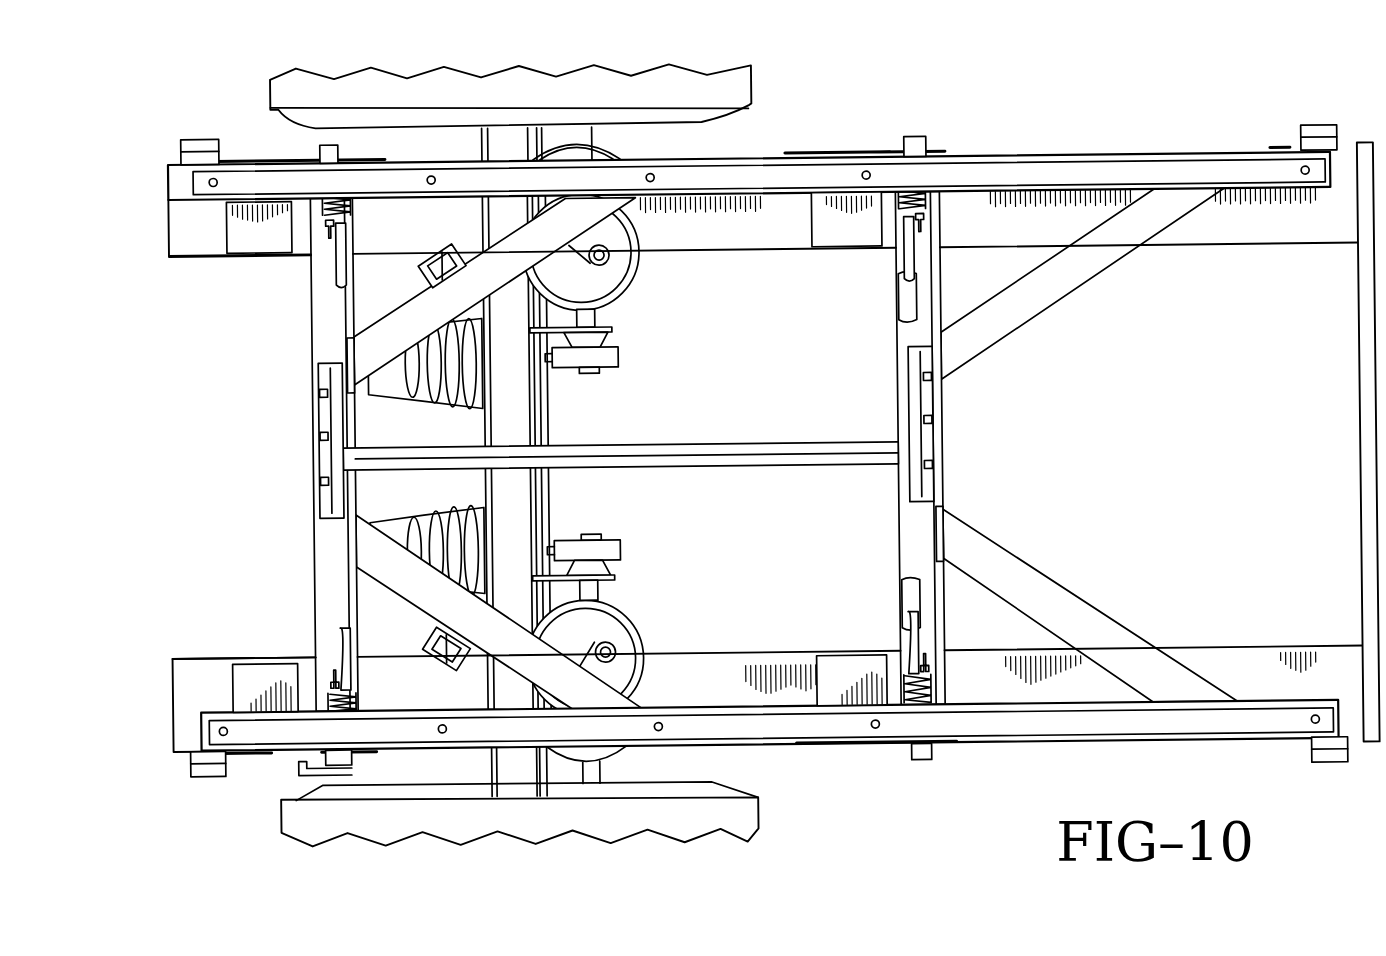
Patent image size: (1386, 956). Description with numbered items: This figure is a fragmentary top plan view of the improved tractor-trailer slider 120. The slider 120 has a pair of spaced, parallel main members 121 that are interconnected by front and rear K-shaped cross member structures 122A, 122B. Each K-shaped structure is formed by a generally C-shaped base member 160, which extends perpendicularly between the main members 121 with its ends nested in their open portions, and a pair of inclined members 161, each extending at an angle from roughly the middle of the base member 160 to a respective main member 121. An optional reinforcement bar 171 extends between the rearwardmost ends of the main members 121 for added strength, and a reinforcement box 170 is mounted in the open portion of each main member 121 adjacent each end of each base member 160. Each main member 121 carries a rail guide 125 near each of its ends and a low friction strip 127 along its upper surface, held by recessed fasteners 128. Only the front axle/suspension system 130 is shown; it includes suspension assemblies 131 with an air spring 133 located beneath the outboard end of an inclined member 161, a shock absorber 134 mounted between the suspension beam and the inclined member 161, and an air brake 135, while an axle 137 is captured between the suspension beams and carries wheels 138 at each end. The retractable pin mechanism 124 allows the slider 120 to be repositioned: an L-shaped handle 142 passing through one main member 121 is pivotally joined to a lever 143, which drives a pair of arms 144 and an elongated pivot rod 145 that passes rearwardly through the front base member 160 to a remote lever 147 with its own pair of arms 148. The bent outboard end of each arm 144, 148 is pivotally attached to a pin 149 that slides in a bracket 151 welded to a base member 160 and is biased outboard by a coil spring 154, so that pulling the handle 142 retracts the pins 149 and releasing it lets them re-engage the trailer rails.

The slider 120 is at (1048, 145).
The main member 121 is at (186, 255).
The front K-shaped cross member structure 122A is at (606, 453).
The rear K-shaped cross member structure 122B is at (794, 451).
The retractable pin mechanism 124 is at (620, 444).
The rail guide 125 is at (200, 138).
The low friction strip 127 is at (1184, 174).
The recessed fastener 128 is at (866, 183).
The axle/suspension system 130 is at (608, 545).
The suspension assembly 131 is at (611, 350).
The air spring 133 is at (639, 280).
The shock absorber 134 is at (456, 262).
The air brake 135 is at (448, 398).
The axle 137 is at (534, 419).
The wheel 138 is at (699, 91).
The L-shaped handle 142 is at (289, 776).
The lever 143 is at (329, 402).
The arm 144 is at (333, 287).
The pivot rod 145 is at (776, 464).
The remote lever 147 is at (905, 418).
The arm 148 is at (903, 308).
The pin 149 is at (322, 151).
The bracket 151 is at (323, 232).
The coil spring 154 is at (341, 207).
The base member 160 is at (343, 364).
The inclined member 161 is at (579, 220).
The reinforcement box 170 is at (233, 229).
The reinforcement bar 171 is at (1358, 344).